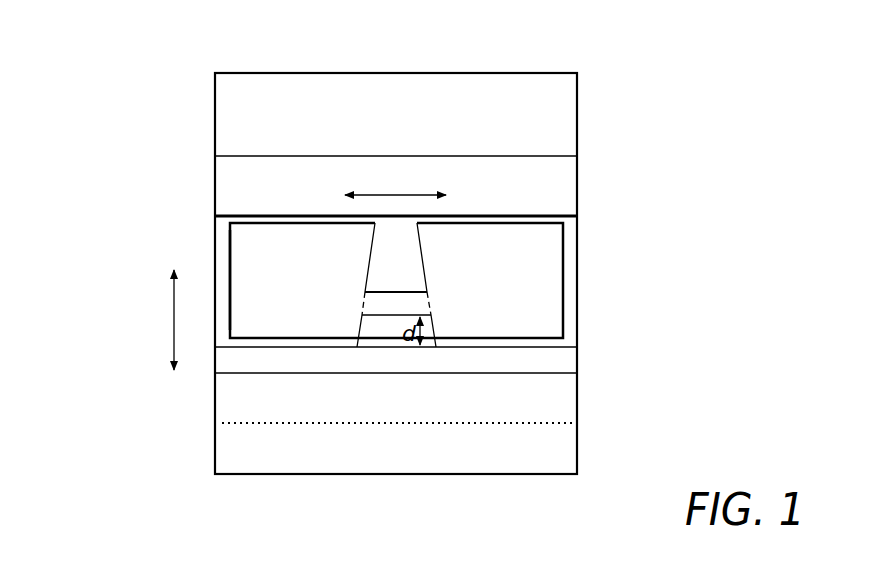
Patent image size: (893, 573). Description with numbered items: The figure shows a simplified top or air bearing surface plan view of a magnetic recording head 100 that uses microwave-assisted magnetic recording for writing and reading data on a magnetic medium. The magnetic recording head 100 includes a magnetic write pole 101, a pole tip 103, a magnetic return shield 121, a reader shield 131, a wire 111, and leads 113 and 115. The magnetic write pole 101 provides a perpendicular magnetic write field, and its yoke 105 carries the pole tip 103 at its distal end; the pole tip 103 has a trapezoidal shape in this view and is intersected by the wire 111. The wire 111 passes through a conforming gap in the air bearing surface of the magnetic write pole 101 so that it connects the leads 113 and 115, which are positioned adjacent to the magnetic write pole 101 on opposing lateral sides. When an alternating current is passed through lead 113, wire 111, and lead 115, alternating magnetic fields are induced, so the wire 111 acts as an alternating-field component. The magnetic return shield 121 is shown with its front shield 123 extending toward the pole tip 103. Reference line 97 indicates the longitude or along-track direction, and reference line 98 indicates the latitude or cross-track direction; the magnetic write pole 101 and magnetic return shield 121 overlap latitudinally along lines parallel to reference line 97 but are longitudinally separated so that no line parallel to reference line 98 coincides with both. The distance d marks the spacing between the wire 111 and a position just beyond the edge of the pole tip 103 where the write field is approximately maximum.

The magnetic recording head 100 is at (116, 69).
The reader shield 131 is at (578, 95).
The magnetic write pole 101 is at (563, 214).
The yoke 105 is at (578, 259).
The lead 115 is at (564, 304).
The lead 113 is at (229, 248).
The pole tip 103 is at (429, 262).
The wire 111 is at (387, 285).
The front shield 123 is at (578, 393).
The magnetic return shield 121 is at (579, 438).
The latitudinal reference line 98 is at (395, 180).
The longitudinal reference line 97 is at (156, 320).